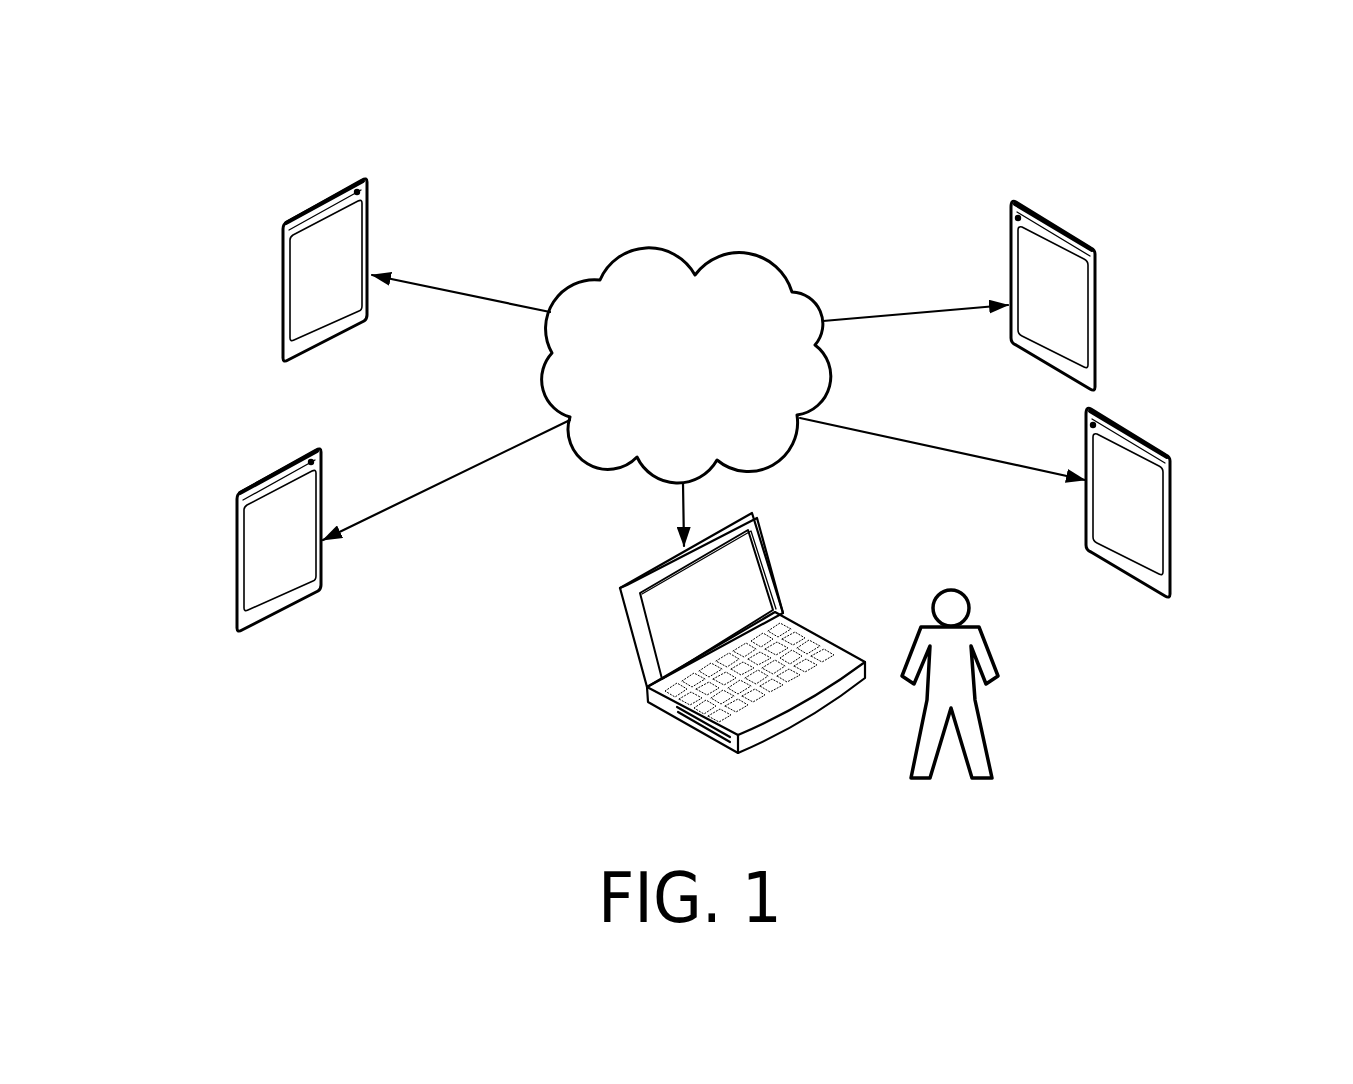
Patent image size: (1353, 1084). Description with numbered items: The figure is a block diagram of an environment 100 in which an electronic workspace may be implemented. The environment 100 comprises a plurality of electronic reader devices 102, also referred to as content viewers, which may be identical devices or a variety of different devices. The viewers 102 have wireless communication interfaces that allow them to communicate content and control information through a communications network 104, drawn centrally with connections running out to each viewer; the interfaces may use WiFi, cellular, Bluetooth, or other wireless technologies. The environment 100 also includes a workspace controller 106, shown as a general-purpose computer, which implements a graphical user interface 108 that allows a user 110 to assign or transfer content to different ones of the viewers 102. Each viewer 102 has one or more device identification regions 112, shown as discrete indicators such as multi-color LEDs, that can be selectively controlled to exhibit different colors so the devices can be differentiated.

The environment 100 is at (925, 123).
The electronic reader devices 102 is at (288, 225).
The communications network 104 is at (742, 265).
The workspace controller 106 is at (702, 632).
The graphical user interface 108 is at (662, 602).
The user 110 is at (968, 633).
The device identification regions 112 is at (359, 191).